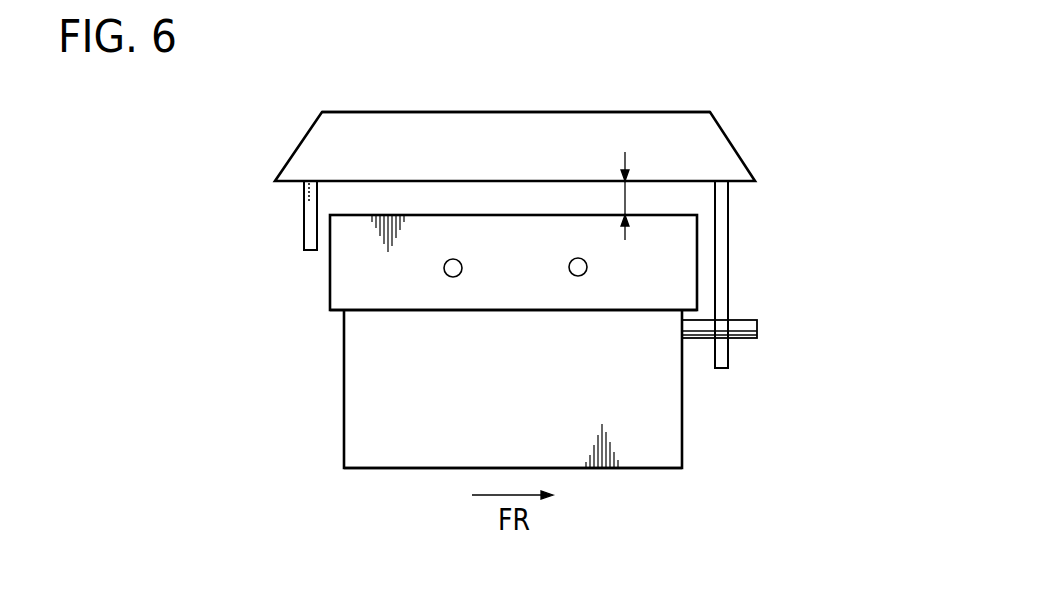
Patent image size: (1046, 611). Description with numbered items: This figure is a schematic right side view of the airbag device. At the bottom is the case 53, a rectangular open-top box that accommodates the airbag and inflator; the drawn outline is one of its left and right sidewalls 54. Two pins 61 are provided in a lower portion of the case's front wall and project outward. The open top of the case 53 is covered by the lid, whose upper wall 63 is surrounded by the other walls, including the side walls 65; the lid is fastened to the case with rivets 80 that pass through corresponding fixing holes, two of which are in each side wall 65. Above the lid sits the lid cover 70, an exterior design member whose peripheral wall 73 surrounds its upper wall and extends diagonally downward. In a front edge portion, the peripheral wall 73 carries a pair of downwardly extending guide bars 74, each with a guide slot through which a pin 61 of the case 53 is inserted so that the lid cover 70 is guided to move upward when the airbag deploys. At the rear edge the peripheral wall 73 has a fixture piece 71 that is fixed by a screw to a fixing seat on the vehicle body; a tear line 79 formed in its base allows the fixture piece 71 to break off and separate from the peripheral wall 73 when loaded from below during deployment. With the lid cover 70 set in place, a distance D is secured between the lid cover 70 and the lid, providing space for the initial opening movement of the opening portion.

The lid cover 70 is at (740, 128).
The peripheral wall 73 is at (530, 158).
The fixture piece 71 is at (305, 238).
The tear line 79 is at (305, 201).
The guide bar 74 is at (723, 247).
The upper wall 63 is at (321, 286).
The side wall 65 is at (530, 287).
The rivet 80 is at (453, 277).
The case 53 is at (335, 398).
The sidewall 54 is at (528, 395).
The pin 61 is at (750, 328).
The distance D is at (627, 200).